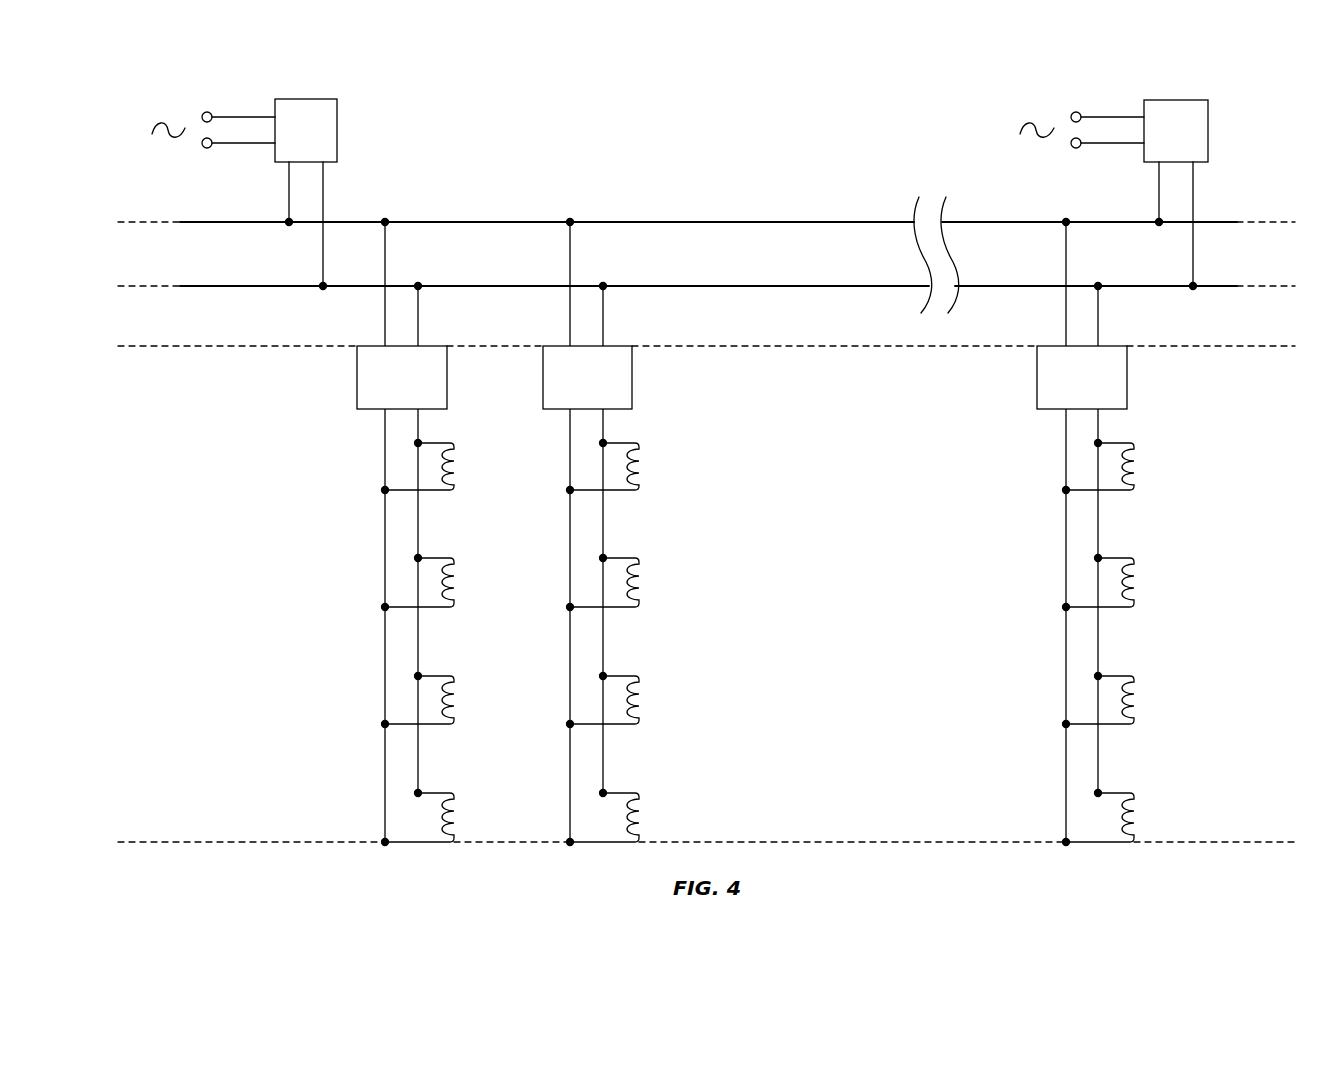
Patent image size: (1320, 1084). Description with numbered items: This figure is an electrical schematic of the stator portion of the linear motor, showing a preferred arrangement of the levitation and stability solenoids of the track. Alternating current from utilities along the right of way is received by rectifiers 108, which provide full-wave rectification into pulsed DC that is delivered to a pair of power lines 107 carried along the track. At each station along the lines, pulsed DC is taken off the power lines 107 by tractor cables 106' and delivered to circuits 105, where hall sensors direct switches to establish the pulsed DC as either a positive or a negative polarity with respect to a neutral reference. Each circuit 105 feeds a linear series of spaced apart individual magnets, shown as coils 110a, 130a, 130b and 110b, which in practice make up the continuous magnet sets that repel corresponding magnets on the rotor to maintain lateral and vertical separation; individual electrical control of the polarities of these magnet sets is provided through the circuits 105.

The circuits 105 is at (370, 372).
The tractor cables 106' is at (740, 531).
The power lines 107 is at (697, 222).
The rectifiers 108 is at (305, 99).
The first magnet 110a is at (456, 462).
The first magnet 110b is at (456, 812).
The second magnet 130a is at (456, 577).
The second magnet 130b is at (456, 695).